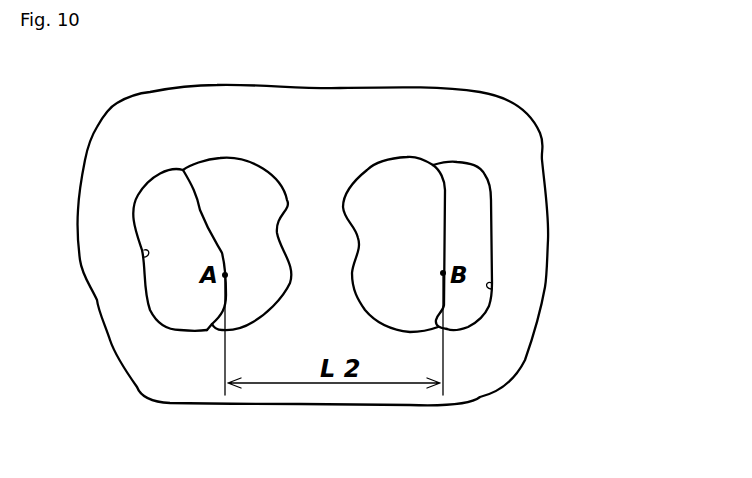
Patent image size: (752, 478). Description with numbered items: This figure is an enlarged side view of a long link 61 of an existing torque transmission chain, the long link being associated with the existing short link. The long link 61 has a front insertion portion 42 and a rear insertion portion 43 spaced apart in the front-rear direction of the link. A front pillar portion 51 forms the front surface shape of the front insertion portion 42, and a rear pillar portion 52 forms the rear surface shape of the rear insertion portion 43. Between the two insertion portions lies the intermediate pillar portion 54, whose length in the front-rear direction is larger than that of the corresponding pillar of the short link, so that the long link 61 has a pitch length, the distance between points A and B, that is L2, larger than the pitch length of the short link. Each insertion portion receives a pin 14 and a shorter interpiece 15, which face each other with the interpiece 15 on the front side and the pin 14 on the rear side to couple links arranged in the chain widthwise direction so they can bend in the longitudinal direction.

The long link 61 is at (592, 170).
The intermediate pillar portion 54 is at (322, 230).
The rear pillar portion 52 is at (97, 235).
The front pillar portion 51 is at (527, 243).
The rear insertion portion 43 is at (144, 256).
The front insertion portion 42 is at (492, 288).
The pin 14 is at (167, 307).
The interpiece 15 is at (470, 312).